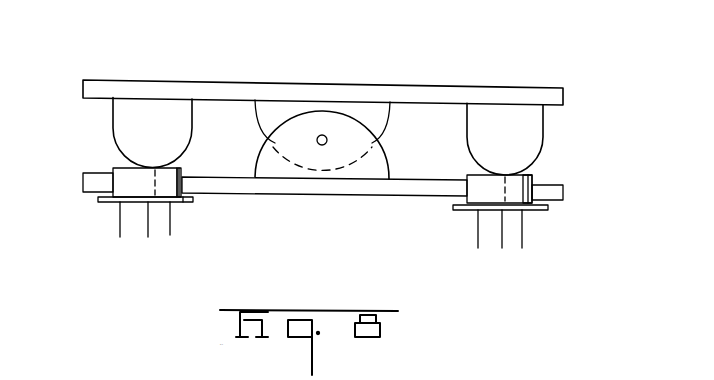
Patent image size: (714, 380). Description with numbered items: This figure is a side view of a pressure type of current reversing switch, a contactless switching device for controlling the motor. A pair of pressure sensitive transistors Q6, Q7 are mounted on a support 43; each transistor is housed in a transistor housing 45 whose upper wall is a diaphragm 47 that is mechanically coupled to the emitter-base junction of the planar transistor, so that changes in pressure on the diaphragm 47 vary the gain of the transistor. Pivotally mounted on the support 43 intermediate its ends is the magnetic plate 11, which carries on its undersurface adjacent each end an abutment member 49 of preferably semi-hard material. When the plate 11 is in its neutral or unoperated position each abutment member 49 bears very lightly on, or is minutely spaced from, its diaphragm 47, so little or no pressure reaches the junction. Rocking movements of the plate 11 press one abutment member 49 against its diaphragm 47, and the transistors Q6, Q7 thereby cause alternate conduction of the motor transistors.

The magnetic plate 11 is at (369, 92).
The abutment member 49 is at (175, 120).
The diaphragm 47 is at (130, 163).
The transistor housing 45 is at (160, 185).
The support 43 is at (335, 190).
The pressure sensitive transistor Q6 is at (107, 203).
The pressure sensitive transistor Q7 is at (513, 197).